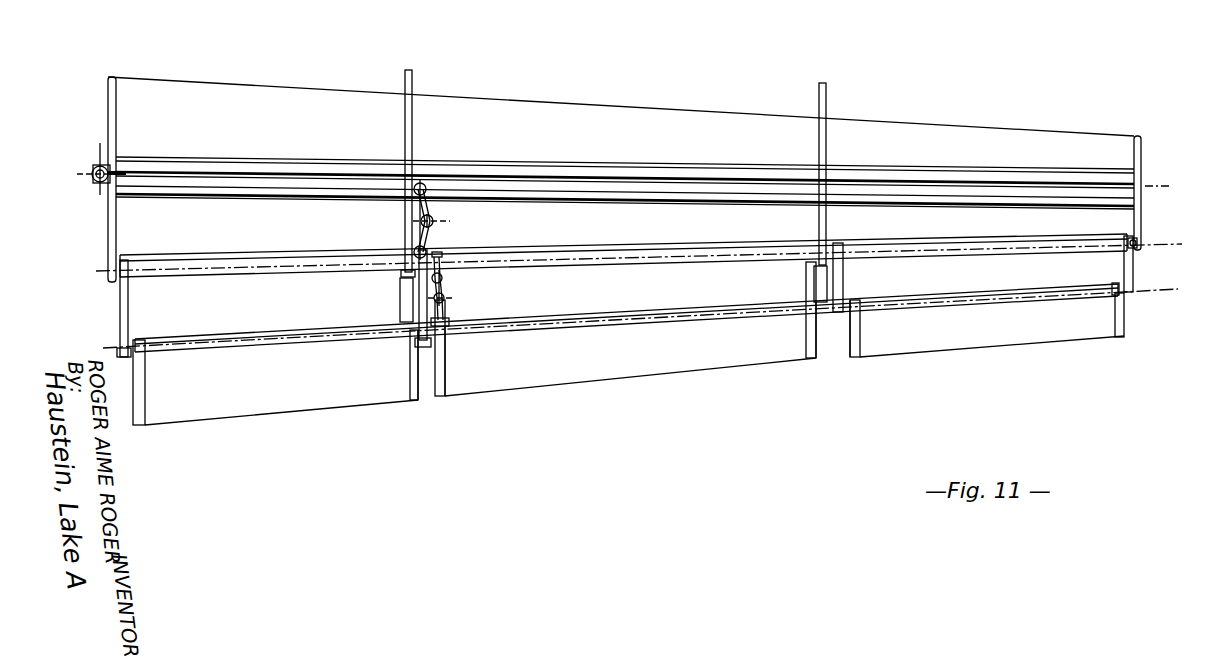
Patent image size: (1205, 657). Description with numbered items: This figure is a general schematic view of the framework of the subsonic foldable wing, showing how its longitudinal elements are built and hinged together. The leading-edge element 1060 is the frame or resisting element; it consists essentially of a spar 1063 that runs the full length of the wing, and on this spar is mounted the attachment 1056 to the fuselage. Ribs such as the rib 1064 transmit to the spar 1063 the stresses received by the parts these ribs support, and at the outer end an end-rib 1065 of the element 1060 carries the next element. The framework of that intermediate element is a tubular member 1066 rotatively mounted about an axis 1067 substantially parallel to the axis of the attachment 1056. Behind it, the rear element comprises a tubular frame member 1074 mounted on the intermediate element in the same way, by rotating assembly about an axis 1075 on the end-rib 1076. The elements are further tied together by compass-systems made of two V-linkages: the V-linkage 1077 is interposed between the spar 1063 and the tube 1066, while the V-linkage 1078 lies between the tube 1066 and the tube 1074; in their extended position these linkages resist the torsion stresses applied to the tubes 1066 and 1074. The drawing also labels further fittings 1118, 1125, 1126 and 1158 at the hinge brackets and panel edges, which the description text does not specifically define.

The attachment 1056 is at (93, 168).
The longitudinal element 1060 is at (660, 132).
The spar 1063 is at (180, 170).
The rib 1064 is at (415, 122).
The end-rib 1065 is at (1160, 112).
The tubular member 1066 is at (297, 270).
The axis 1067 is at (1137, 240).
The tubular frame member 1074 is at (535, 328).
The axis 1075 is at (1130, 293).
The end-rib 1076 is at (1127, 260).
The V-linkage 1077 is at (432, 220).
The V-linkage 1078 is at (436, 300).
The hinge post 1118 is at (423, 300).
The bracket plate 1125 is at (417, 280).
The panel edge member 1126 is at (430, 400).
The flap panel 1158 is at (972, 330).